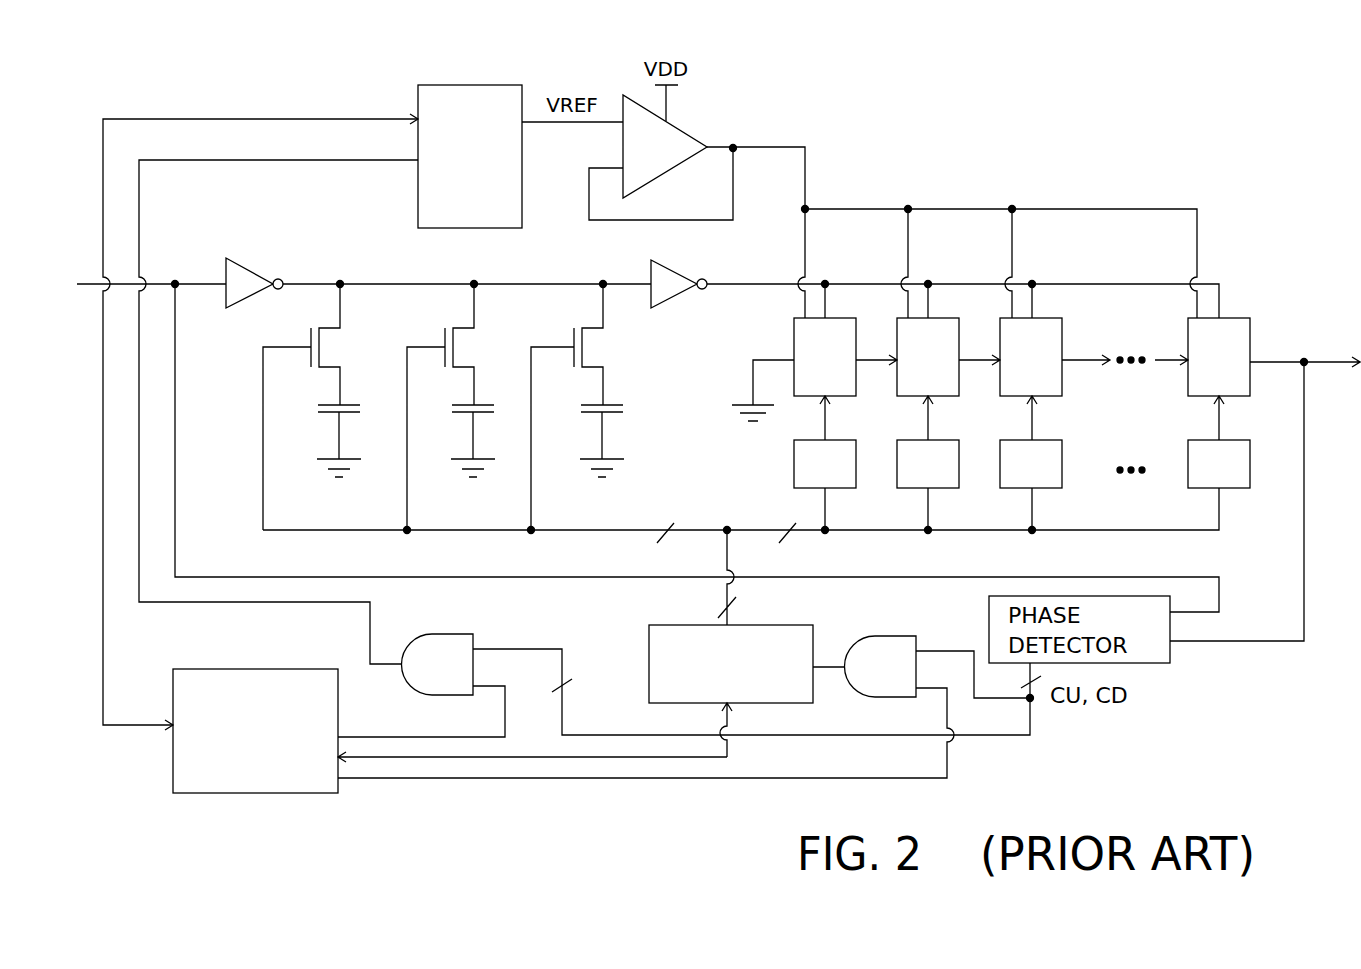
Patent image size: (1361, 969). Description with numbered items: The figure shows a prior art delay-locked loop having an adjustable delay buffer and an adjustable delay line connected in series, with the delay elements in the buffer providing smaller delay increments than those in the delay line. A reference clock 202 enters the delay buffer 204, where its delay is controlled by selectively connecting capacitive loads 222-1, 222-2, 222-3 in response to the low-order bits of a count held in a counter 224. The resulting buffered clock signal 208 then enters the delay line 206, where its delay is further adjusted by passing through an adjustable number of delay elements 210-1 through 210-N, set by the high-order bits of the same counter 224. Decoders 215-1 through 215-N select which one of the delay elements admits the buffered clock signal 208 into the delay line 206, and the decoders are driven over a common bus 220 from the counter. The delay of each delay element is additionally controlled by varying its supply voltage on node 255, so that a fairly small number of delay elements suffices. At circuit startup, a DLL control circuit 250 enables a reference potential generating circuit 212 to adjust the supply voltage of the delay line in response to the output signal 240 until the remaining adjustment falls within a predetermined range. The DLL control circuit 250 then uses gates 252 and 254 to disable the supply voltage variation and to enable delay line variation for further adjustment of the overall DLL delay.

The reference clock 202 is at (199, 284).
The delay buffer 204 is at (454, 354).
The delay line 206 is at (1000, 297).
The buffered clock signal 208 is at (1117, 284).
The delay element 210-1 is at (1248, 318).
The delay element 210-N is at (794, 342).
The reference potential generating circuit 212 is at (418, 85).
The decoder 215-1 is at (1188, 455).
The decoder 215-N is at (794, 470).
The control bus 220 is at (1168, 533).
The capacitive load 222-1 is at (333, 413).
The capacitive load 222-2 is at (467, 413).
The capacitive load 222-3 is at (596, 413).
The counter 224 is at (666, 625).
The output signal 240 is at (1272, 362).
The DLL control circuit 250 is at (225, 669).
The gate 252 is at (440, 634).
The gate 254 is at (885, 636).
The node 255 is at (887, 209).